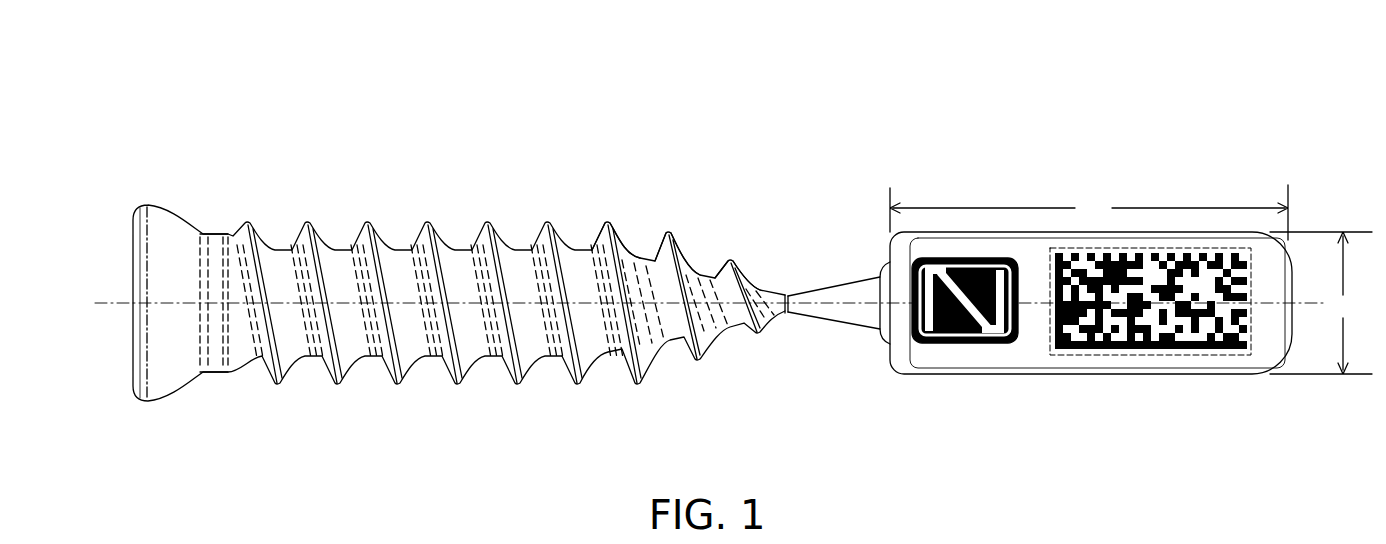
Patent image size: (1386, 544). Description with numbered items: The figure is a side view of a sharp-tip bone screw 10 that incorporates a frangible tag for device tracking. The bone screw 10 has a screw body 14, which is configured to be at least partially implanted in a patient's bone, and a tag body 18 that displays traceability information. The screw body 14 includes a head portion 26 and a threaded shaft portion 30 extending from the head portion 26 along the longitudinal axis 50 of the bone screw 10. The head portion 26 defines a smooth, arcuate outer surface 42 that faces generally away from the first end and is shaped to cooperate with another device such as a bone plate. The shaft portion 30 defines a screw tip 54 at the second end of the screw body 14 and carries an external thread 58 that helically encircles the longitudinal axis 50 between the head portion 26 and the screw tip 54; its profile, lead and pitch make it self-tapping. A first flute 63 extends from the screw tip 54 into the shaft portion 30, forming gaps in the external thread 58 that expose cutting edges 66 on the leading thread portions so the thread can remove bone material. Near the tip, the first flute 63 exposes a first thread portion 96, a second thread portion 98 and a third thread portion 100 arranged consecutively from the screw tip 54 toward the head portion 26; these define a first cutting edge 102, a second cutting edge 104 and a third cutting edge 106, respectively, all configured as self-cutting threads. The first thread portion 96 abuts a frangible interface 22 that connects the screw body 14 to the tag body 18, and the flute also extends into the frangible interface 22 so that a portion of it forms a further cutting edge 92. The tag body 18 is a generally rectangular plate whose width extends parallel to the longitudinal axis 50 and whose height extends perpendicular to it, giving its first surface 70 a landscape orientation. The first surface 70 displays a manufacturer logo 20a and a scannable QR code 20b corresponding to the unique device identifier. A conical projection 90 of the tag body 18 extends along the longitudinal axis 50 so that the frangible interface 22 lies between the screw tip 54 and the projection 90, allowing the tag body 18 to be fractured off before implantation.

The bone screw 10 is at (137, 70).
The screw body 14 is at (452, 157).
The tag body 18 is at (1146, 172).
The logo 20a is at (972, 347).
The QR code 20b is at (1200, 353).
The frangible interface 22 is at (785, 318).
The head portion 26 is at (164, 406).
The threaded shaft portion 30 is at (431, 370).
The outer surface 42 is at (180, 210).
The longitudinal axis 50 is at (103, 303).
The screw tip 54 is at (792, 283).
The external thread 58 is at (283, 385).
The first flute 63 is at (655, 332).
The cutting edges 66 is at (695, 242).
The first surface 70 is at (1028, 356).
The projection 90 is at (855, 283).
The further cutting edge 92 is at (814, 282).
The first thread portion 96 is at (724, 246).
The second thread portion 98 is at (664, 227).
The third thread portion 100 is at (597, 226).
The first cutting edge 102 is at (740, 263).
The second cutting edge 104 is at (682, 238).
The third cutting edge 106 is at (622, 222).